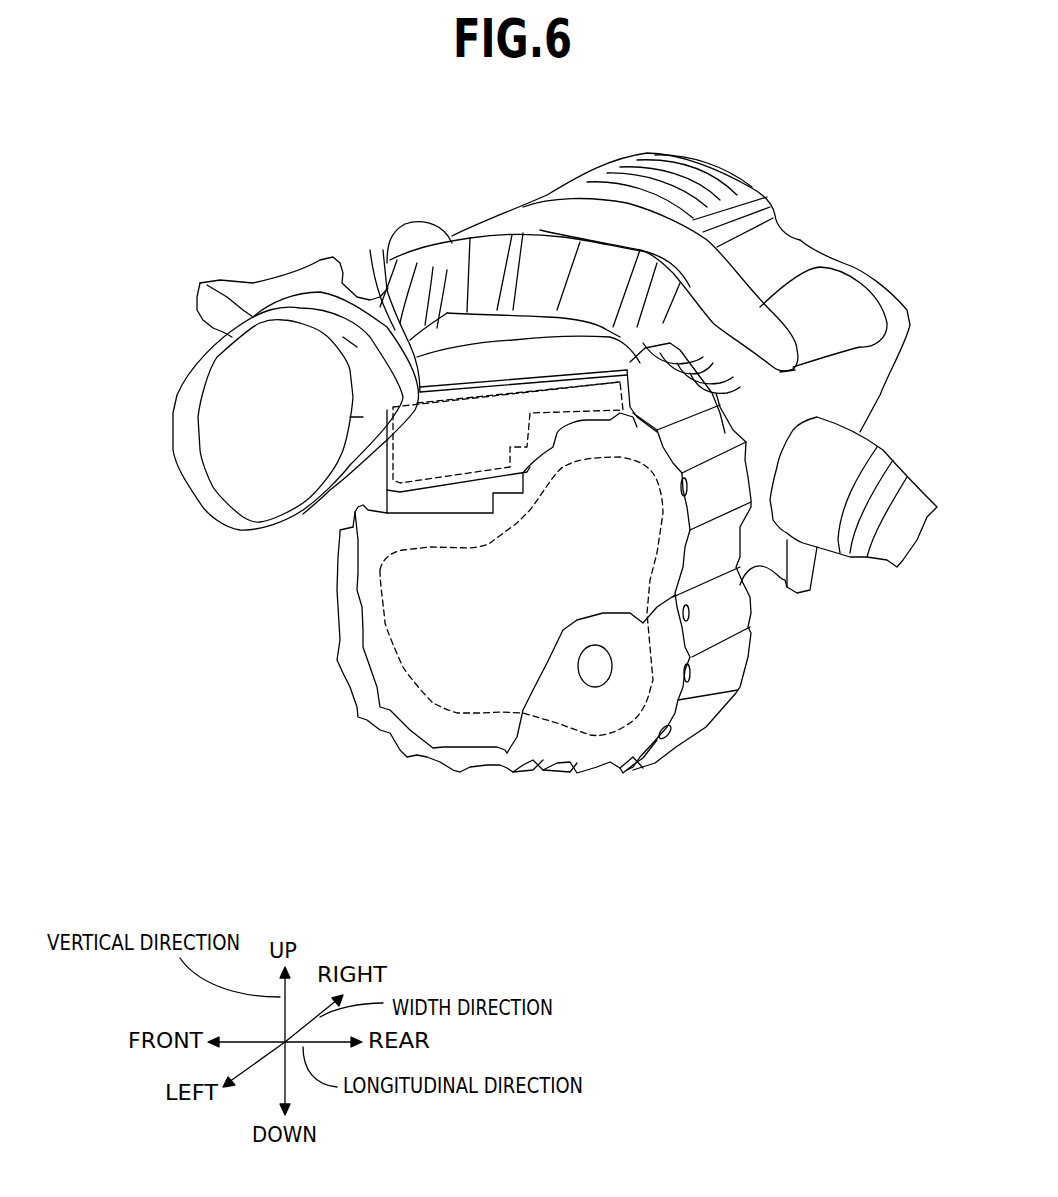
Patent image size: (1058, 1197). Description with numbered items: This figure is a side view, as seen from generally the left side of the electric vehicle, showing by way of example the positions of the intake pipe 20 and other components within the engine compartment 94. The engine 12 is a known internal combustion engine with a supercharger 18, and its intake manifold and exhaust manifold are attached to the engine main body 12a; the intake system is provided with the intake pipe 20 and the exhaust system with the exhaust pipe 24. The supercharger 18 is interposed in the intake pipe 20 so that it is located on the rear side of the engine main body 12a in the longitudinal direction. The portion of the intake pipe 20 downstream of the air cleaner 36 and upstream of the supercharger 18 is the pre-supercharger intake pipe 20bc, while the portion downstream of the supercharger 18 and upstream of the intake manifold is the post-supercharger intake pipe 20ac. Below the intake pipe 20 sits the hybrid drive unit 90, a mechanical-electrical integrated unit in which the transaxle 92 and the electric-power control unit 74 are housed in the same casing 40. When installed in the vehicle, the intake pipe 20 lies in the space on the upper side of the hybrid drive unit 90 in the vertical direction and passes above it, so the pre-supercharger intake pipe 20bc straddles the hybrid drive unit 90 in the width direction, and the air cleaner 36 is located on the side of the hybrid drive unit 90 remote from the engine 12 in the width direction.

The engine compartment 94 is at (268, 133).
The engine 12 is at (718, 141).
The engine main body 12a is at (785, 250).
The supercharger 18 is at (815, 295).
The intake pipe 20 is at (414, 151).
The post-supercharger intake pipe 20ac is at (520, 215).
The pre-supercharger intake pipe 20bc is at (457, 268).
The exhaust pipe 24 is at (847, 467).
The air cleaner 36 is at (227, 487).
The casing 40 is at (717, 663).
The electric-power control unit 74 is at (460, 437).
The hybrid drive unit 90 is at (318, 705).
The transaxle 92 is at (503, 690).